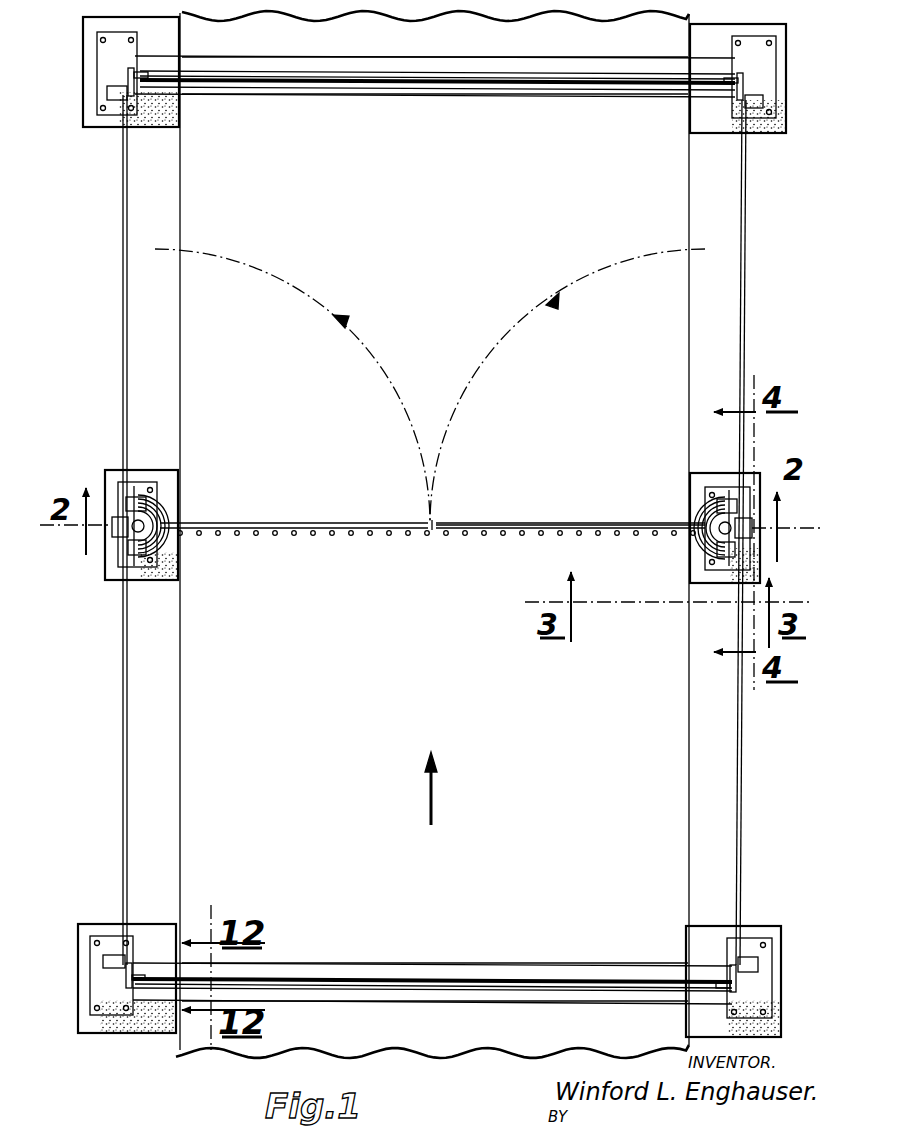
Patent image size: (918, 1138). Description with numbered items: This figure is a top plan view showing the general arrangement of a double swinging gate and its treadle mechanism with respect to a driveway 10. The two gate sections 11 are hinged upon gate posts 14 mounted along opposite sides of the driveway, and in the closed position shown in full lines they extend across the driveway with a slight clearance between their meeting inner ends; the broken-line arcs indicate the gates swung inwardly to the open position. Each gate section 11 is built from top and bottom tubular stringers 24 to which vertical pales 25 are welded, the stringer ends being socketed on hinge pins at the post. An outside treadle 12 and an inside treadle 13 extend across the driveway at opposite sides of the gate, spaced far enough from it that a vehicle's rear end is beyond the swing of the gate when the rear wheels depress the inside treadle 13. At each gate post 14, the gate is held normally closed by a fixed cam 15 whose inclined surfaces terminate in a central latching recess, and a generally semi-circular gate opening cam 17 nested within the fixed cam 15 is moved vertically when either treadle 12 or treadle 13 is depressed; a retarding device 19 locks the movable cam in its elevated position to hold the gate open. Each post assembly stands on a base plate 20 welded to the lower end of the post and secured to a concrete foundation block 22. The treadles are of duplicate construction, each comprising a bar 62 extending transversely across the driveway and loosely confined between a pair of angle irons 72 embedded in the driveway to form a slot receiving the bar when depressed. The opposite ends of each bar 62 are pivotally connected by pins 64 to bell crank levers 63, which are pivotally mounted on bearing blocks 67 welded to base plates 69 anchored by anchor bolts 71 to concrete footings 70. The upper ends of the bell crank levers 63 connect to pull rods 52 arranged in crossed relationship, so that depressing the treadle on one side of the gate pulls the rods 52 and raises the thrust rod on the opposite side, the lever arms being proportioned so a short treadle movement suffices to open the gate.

The driveway 10 is at (205, 373).
The gate section 11 is at (310, 520).
The outside treadle 12 is at (405, 978).
The inside treadle 13 is at (586, 70).
The gate post 14 is at (150, 535).
The fixed cam 15 is at (168, 498).
The gate opening cam 17 is at (170, 516).
The retarding device 19 is at (112, 538).
The base plate 20 is at (137, 486).
The concrete foundation block 22 is at (165, 578).
The stringer 24 is at (466, 522).
The pale 25 is at (310, 536).
The pull rod 52 is at (122, 333).
The bar 62 is at (432, 80).
The bell crank lever 63 is at (125, 78).
The pin 64 is at (146, 72).
The bearing block 67 is at (107, 96).
The base plate 69 is at (106, 60).
The concrete footing 70 is at (154, 126).
The anchor bolt 71 is at (776, 41).
The angle iron 72 is at (332, 62).